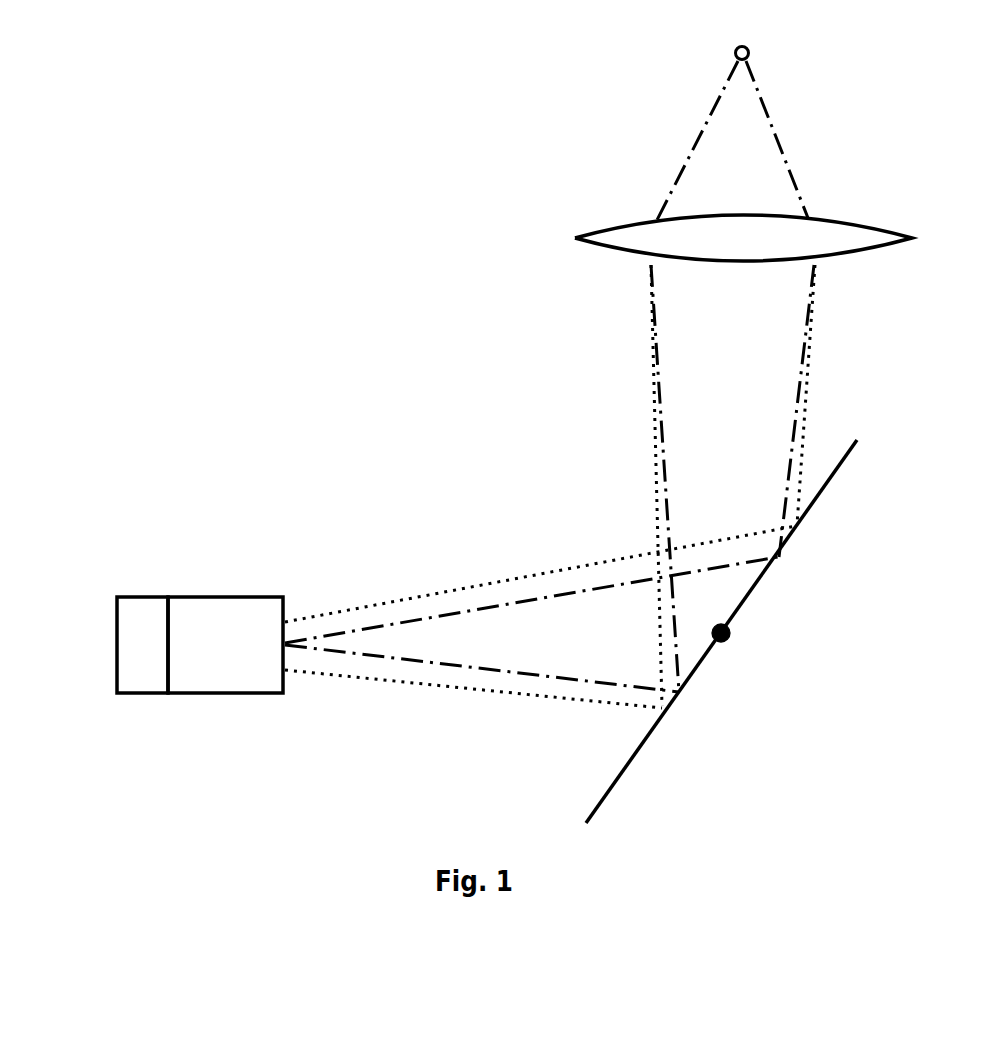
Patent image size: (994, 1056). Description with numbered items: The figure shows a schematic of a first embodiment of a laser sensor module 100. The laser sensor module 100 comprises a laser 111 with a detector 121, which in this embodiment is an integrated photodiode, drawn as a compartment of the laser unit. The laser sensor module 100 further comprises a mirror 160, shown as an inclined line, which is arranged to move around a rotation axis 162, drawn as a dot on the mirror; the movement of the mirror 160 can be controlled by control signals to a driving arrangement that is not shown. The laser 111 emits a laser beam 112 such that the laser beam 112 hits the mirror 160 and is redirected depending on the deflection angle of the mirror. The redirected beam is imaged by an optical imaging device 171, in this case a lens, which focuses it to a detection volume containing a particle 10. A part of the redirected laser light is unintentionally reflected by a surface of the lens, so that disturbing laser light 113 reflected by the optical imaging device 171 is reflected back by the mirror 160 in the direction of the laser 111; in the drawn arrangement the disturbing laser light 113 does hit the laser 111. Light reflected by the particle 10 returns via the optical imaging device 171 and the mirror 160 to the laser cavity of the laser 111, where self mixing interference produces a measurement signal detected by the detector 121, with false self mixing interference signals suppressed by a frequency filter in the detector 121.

The laser sensor module 100 is at (228, 236).
The particle 10 is at (750, 56).
The optical imaging device 171 is at (578, 236).
The mirror 160 is at (793, 537).
The rotation axis 162 is at (728, 642).
The detector 121 is at (125, 675).
The laser 111 is at (228, 596).
The disturbing laser light 113 is at (351, 683).
The laser beam 112 is at (570, 685).